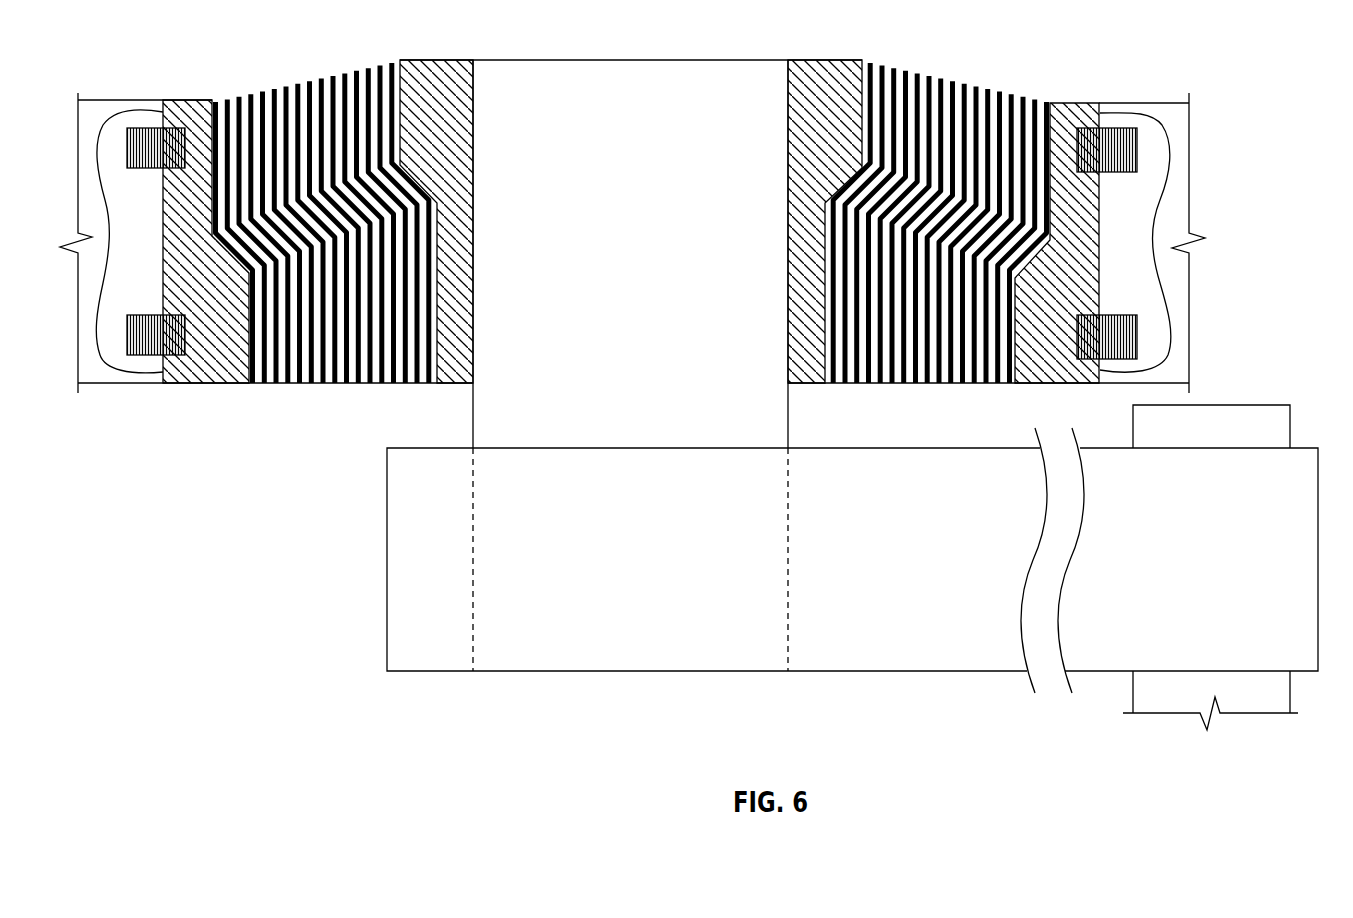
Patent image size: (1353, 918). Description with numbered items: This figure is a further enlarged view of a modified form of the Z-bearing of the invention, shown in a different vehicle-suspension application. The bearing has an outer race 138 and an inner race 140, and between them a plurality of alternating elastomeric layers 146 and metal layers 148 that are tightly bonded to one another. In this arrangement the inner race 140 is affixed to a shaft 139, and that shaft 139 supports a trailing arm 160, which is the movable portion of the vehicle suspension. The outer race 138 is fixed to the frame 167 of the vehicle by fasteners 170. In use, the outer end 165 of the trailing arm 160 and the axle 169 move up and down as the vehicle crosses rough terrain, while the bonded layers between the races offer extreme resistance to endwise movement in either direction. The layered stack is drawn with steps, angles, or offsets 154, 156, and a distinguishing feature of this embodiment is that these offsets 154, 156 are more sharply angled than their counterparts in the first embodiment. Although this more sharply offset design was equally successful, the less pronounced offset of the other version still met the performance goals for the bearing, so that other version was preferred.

The outer race 138 is at (1063, 282).
The shaft 139 is at (487, 402).
The inner race 140 is at (798, 292).
The elastomeric layers 146 is at (330, 77).
The metal layers 148 is at (267, 90).
The offset 154 is at (338, 205).
The offset 156 is at (332, 220).
The trailing arm 160 is at (558, 660).
The outer end 165 is at (1118, 648).
The frame 167 is at (1143, 203).
The axle 169 is at (1253, 703).
The fasteners 170 is at (1115, 130).